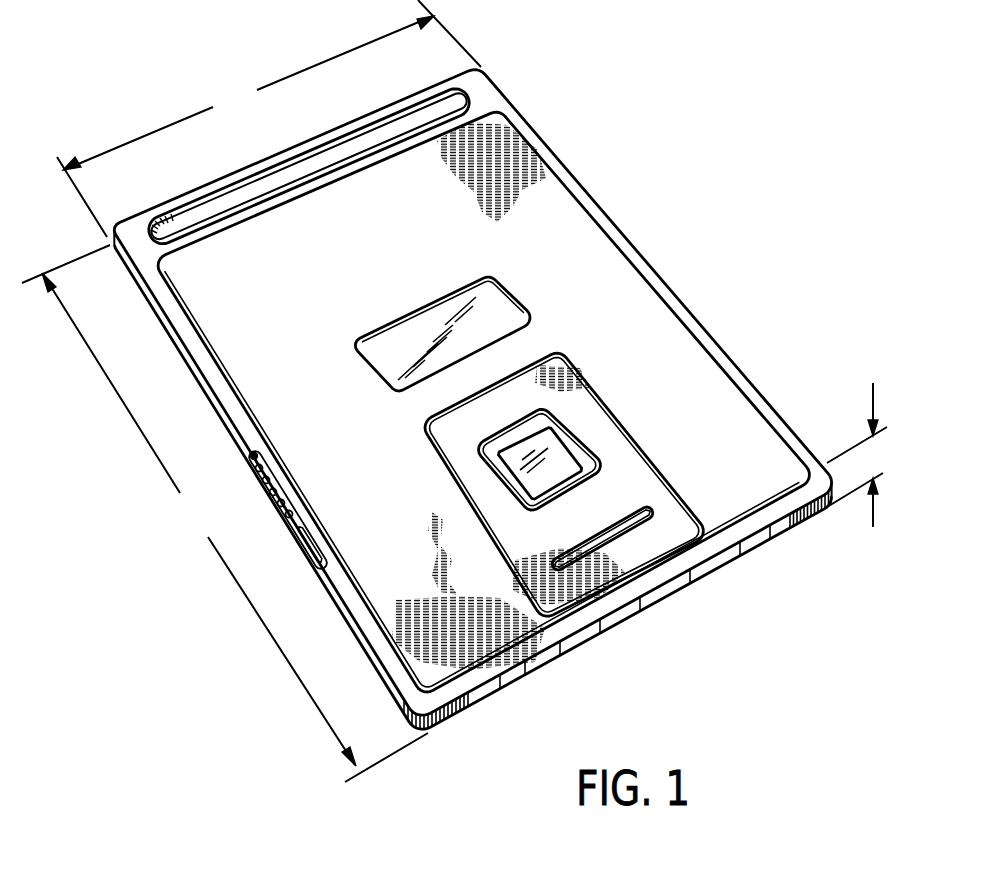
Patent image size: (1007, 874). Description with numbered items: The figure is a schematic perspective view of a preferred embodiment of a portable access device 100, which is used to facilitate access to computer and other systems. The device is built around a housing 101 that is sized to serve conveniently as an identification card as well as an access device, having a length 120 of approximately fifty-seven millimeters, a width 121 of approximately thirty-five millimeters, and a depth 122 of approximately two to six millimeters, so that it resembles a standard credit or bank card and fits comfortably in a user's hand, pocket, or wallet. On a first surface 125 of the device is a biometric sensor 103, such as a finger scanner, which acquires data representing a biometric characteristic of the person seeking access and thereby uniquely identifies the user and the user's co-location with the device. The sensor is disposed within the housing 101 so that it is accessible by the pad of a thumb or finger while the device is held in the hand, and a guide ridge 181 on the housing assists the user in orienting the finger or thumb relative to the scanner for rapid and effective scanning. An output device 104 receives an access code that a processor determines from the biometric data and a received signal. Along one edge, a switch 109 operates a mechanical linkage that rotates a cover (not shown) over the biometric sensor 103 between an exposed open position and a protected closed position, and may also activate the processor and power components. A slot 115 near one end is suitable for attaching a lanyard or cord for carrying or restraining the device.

The portable access device 100 is at (682, 270).
The housing 101 is at (718, 402).
The biometric sensor 103 is at (557, 453).
The output device 104 is at (497, 307).
The switch 109 is at (282, 505).
The slot 115 is at (468, 88).
The length 120 is at (225, 513).
The width 121 is at (269, 118).
The depth 122 is at (860, 455).
The first surface 125 is at (325, 273).
The guide ridge 181 is at (605, 540).